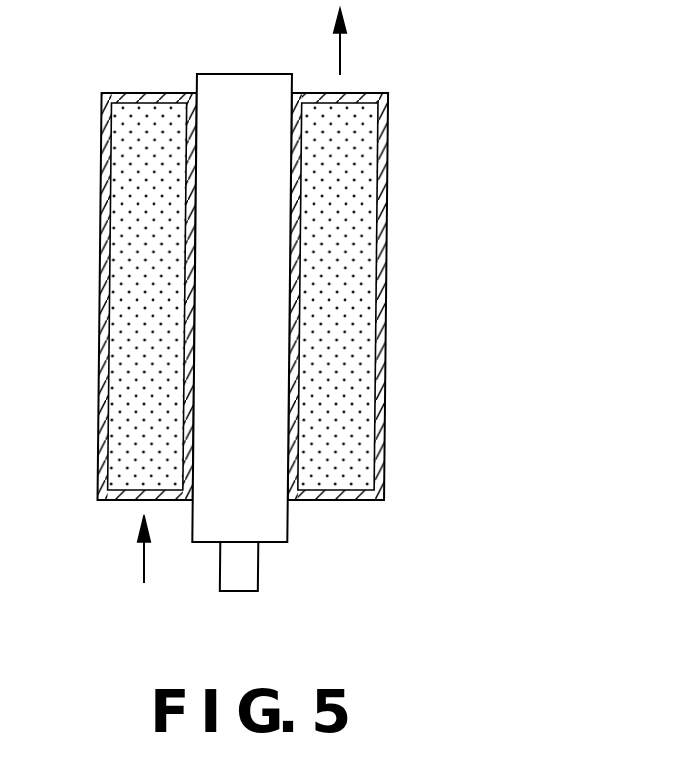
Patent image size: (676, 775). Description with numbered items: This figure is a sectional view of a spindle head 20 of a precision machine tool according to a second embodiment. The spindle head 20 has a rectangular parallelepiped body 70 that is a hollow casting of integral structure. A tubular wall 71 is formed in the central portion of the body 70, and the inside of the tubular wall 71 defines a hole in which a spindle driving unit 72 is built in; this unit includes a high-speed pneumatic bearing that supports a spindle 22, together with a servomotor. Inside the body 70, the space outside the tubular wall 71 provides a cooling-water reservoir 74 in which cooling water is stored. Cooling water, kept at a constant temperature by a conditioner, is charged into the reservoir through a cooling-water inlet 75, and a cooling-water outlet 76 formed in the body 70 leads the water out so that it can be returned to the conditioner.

The spindle head 20 is at (285, 299).
The spindle 22 is at (253, 563).
The body 70 is at (383, 263).
The tubular wall 71 is at (104, 265).
The spindle driving unit 72 is at (270, 342).
The cooling-water reservoir 74 is at (140, 342).
The cooling-water inlet 75 is at (145, 500).
The cooling-water outlet 76 is at (340, 99).